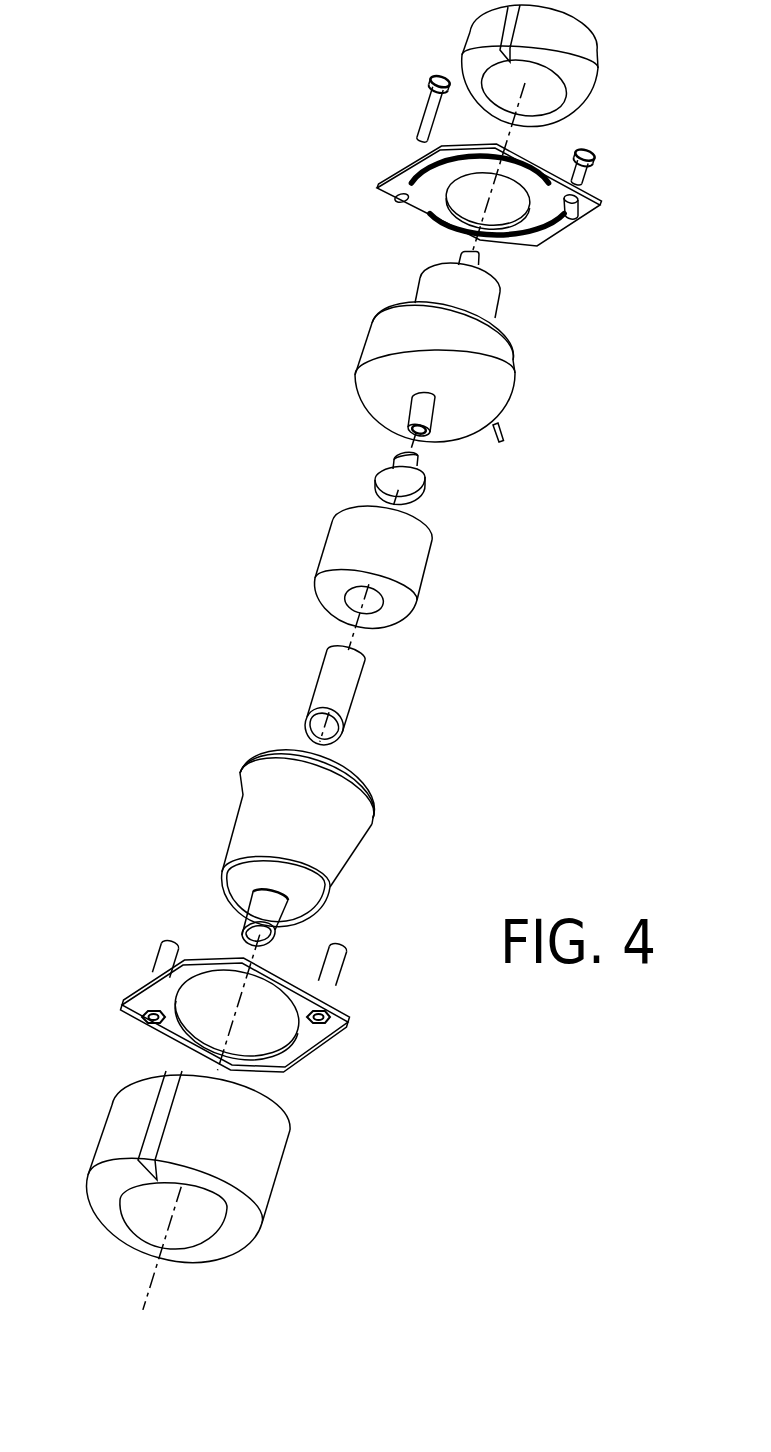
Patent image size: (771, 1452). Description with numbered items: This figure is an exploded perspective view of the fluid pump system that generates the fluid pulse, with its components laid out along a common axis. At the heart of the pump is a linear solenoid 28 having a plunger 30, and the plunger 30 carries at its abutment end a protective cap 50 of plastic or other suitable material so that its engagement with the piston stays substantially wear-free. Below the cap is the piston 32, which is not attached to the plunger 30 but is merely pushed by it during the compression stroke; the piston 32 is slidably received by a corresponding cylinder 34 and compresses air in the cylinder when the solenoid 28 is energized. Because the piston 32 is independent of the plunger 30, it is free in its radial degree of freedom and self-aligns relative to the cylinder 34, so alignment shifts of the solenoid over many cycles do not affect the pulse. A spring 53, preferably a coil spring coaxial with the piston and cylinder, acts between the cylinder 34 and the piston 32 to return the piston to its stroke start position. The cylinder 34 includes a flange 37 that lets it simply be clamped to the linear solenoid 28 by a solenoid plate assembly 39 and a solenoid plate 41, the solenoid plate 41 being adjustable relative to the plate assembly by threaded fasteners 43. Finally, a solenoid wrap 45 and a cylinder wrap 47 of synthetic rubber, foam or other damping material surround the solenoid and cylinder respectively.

The linear solenoid 28 is at (378, 343).
The plunger 30 is at (418, 412).
The piston 32 is at (333, 555).
The cylinder 34 is at (252, 828).
The flange 37 is at (370, 812).
The solenoid plate assembly 39 is at (313, 1038).
The solenoid plate 41 is at (383, 200).
The threaded fasteners 43 is at (428, 103).
The solenoid wrap 45 is at (580, 45).
The cylinder wrap 47 is at (120, 1128).
The protective cap 50 is at (418, 478).
The spring 53 is at (343, 697).